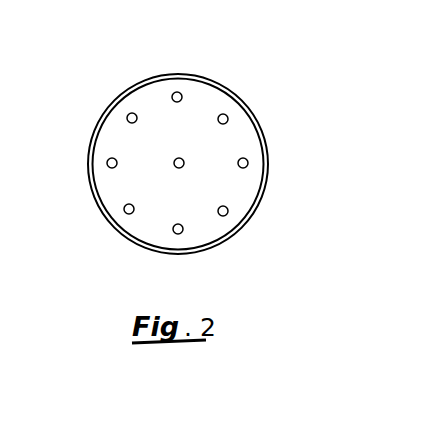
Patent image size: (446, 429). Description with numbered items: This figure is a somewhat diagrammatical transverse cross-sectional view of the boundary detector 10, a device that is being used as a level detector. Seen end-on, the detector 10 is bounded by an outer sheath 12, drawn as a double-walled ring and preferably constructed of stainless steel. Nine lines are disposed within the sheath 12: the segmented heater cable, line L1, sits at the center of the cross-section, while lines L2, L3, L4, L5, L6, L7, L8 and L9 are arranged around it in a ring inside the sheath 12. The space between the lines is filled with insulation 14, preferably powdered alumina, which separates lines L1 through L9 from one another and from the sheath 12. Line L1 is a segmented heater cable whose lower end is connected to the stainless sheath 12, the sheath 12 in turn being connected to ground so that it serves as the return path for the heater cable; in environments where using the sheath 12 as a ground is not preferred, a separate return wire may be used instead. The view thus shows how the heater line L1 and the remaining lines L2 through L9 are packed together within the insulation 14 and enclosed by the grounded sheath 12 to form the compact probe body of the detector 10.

The boundary detector 10 is at (295, 108).
The outer sheath 12 is at (262, 130).
The insulation 14 is at (237, 182).
The segmented heater cable L1 is at (181, 157).
The line L2 is at (227, 115).
The line L3 is at (249, 162).
The line L4 is at (229, 210).
The line L5 is at (178, 235).
The line L6 is at (124, 212).
The line L7 is at (107, 163).
The line L8 is at (128, 114).
The line L9 is at (177, 92).